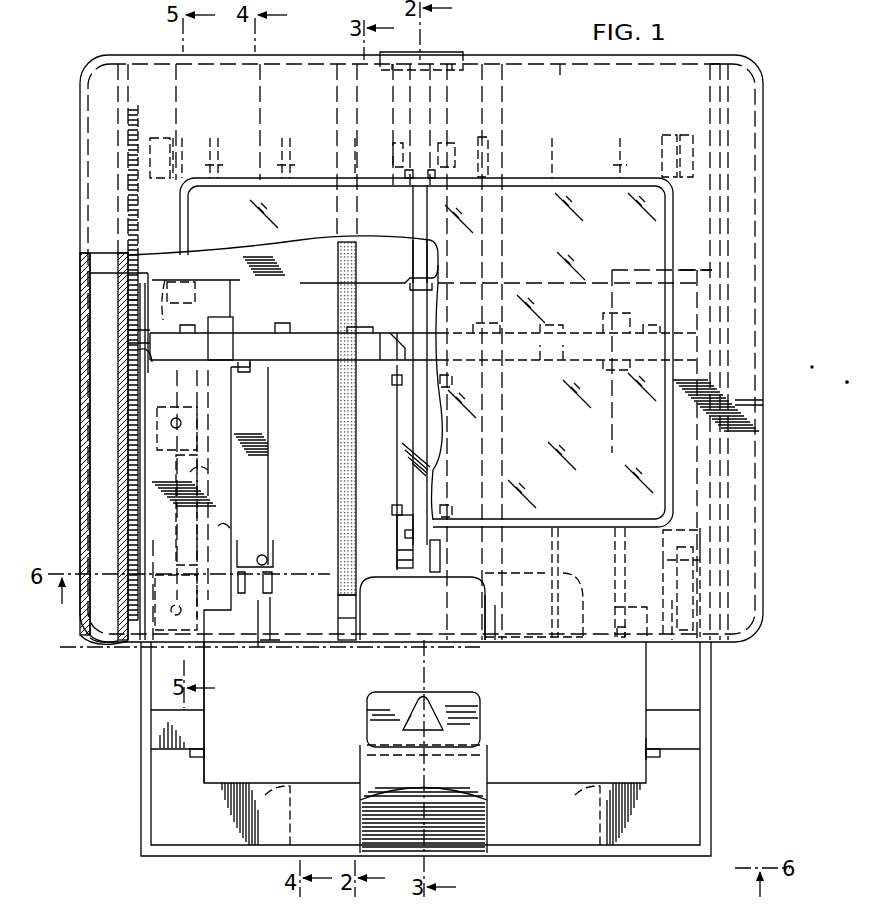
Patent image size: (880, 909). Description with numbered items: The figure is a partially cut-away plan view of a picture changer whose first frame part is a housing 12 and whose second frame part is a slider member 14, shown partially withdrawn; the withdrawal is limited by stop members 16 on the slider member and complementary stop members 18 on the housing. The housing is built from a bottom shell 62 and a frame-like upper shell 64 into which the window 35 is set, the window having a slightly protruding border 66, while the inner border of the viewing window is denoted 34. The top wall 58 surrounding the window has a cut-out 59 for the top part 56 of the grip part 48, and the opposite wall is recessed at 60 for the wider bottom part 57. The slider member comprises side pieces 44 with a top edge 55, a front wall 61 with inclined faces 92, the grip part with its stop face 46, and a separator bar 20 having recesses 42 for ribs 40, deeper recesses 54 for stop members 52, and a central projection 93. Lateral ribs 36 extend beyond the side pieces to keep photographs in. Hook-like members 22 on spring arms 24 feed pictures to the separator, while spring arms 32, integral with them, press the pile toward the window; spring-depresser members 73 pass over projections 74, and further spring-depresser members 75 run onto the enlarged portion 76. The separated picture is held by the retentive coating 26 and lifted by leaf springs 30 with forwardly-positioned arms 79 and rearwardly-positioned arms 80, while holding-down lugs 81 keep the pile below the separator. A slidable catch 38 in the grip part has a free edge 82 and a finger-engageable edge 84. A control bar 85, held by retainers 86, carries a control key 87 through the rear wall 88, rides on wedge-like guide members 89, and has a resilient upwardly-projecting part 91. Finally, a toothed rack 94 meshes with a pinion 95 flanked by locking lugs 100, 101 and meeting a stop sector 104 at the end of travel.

The housing 12 is at (117, 55).
The slider member 14 is at (141, 757).
The stop members 16 is at (118, 280).
The complementary stop members 18 is at (110, 635).
The separator bar 20 is at (318, 290).
The hook-like members 22 is at (262, 555).
The spring arms 24 is at (265, 490).
The retentive coating 26 is at (340, 428).
The leaf springs 30 is at (160, 445).
The spring arms 32 is at (245, 248).
The inner border of viewing window 34 is at (575, 183).
The window 35 is at (481, 356).
The lateral ribs 36 is at (180, 140).
The slidable catch 38 is at (465, 695).
The ribs 40 is at (548, 150).
The recesses 42 is at (283, 355).
The side pieces 44 is at (145, 680).
The stop face 46 is at (365, 748).
The grip part 48 is at (455, 790).
The stop members 52 is at (622, 160).
The recesses 54 is at (215, 318).
The top edge 55 is at (150, 718).
The top part 56 is at (375, 830).
The bottom part 57 is at (615, 795).
The top wall 58 is at (560, 70).
The cut-out 59 is at (478, 615).
The recess 60 is at (524, 578).
The front wall 61 is at (200, 857).
The bottom shell 62 is at (82, 455).
The upper shell 64 is at (232, 72).
The border 66 is at (670, 478).
The spring-depresser members 73 is at (243, 372).
The projections 74 is at (240, 165).
The spring-depresser members 75 is at (217, 612).
The enlarged portion 76 is at (220, 530).
The forwardly-positioned arms 79 is at (222, 478).
The rearwardly-positioned arms 80 is at (165, 275).
The holding-down lugs 81 is at (622, 577).
The free edge 82 is at (378, 690).
The finger-engageable edge 84 is at (445, 712).
The control bar 85 is at (398, 262).
The retainers 86 is at (385, 160).
The control key 87 is at (420, 50).
The rear wall 88 is at (270, 60).
The wedge-like guide members 89 is at (406, 536).
The upwardly-projecting part 91 is at (405, 572).
The inclined faces 92 is at (662, 733).
The projection 93 is at (393, 340).
The toothed rack 94 is at (125, 530).
The pinion 95 is at (148, 352).
The locking lug 100 is at (128, 345).
The locking lug 101 is at (130, 290).
The stop sector 104 is at (118, 575).